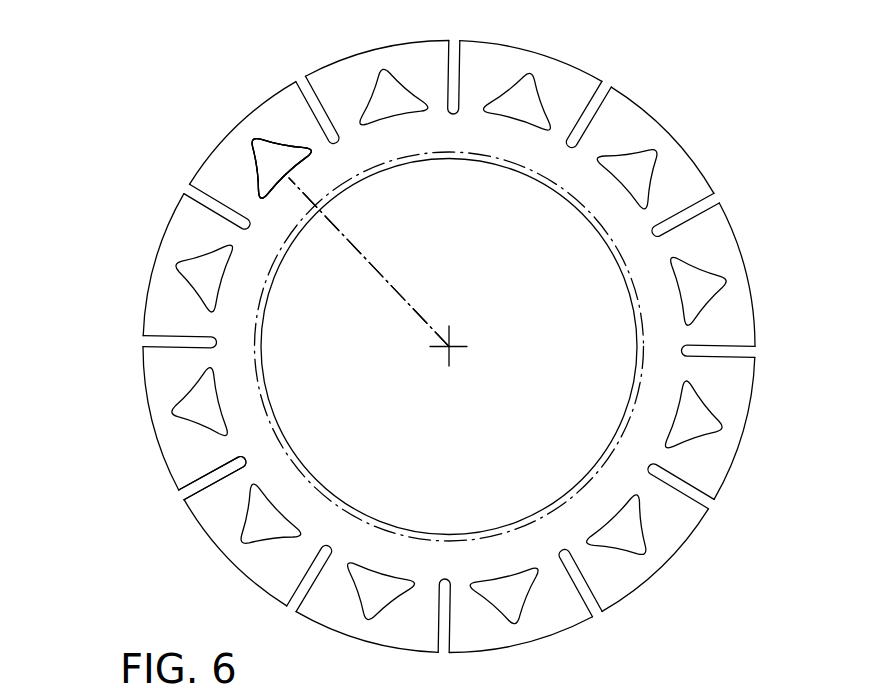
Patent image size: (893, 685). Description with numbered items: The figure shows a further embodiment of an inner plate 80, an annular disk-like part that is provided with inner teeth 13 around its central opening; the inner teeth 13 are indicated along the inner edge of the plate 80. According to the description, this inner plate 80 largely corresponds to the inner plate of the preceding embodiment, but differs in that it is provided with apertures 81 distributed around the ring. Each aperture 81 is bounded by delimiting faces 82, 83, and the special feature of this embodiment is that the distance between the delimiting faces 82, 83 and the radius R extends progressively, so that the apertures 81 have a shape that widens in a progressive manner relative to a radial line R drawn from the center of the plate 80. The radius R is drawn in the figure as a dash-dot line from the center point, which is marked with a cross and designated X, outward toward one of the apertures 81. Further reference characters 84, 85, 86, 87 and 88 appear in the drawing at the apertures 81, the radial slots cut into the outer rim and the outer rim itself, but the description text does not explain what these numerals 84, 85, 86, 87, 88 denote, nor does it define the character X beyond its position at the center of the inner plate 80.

The inner plate 80 is at (698, 155).
The inner teeth 13 is at (578, 202).
The apertures 81 is at (212, 400).
The delimiting face 82 is at (287, 145).
The delimiting face 83 is at (258, 174).
The apex of triangular opening 84 is at (258, 141).
The radial reference line 85 is at (290, 180).
The radial slot 86 is at (195, 490).
The outer rim 87 is at (150, 268).
The slot inner end 88 is at (241, 465).
The radius R is at (408, 302).
The center axis X is at (448, 348).